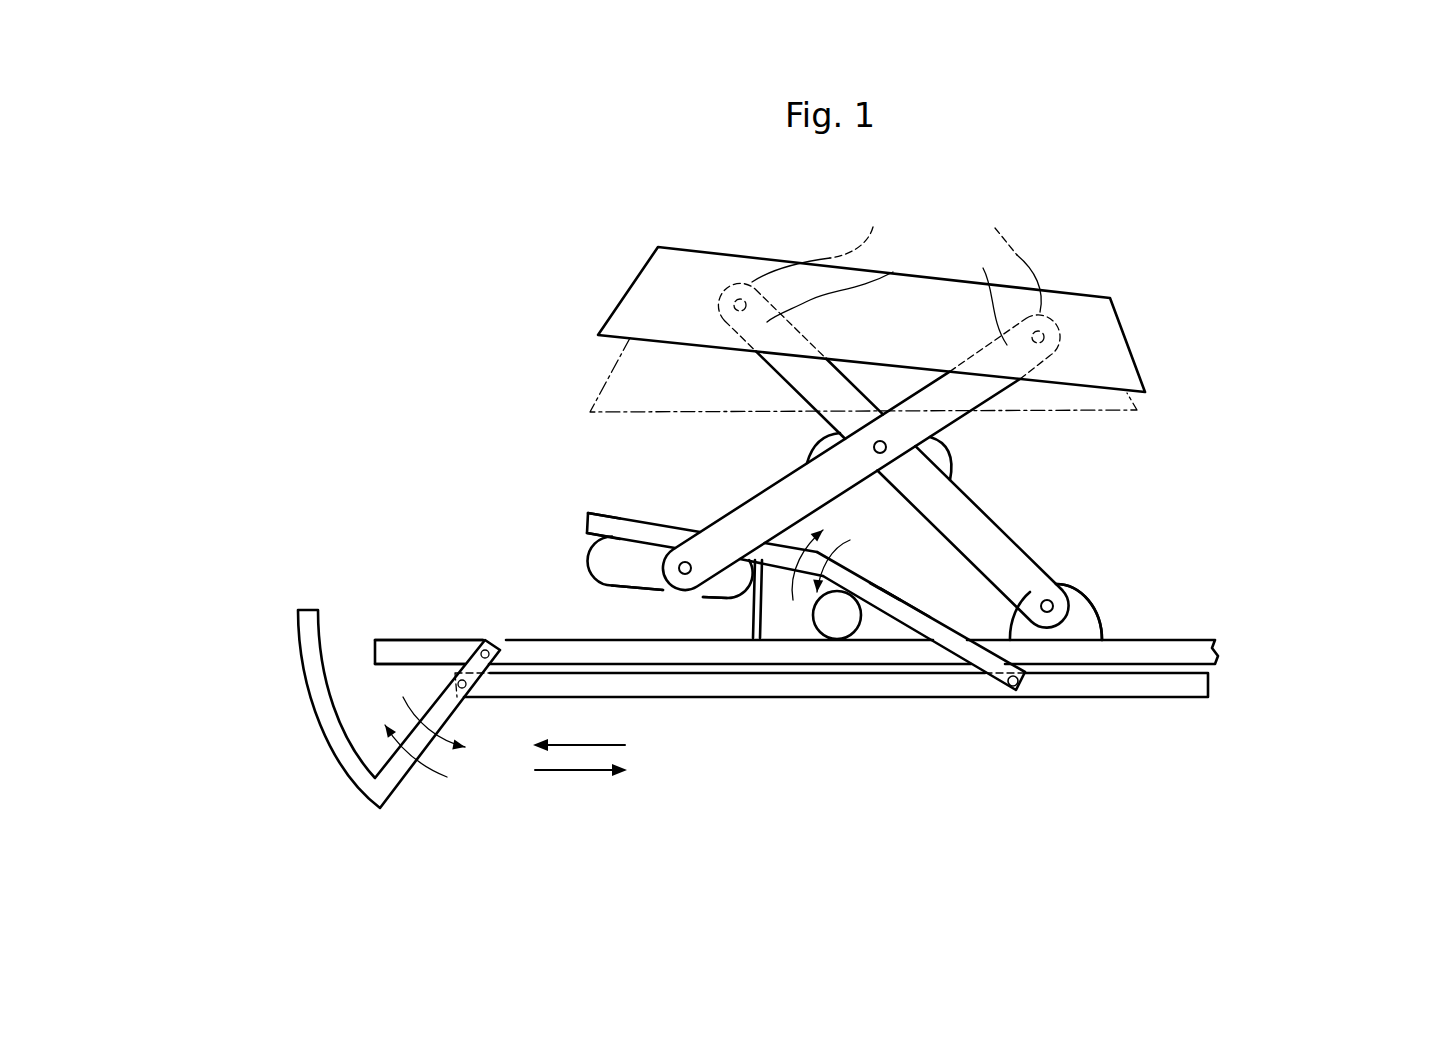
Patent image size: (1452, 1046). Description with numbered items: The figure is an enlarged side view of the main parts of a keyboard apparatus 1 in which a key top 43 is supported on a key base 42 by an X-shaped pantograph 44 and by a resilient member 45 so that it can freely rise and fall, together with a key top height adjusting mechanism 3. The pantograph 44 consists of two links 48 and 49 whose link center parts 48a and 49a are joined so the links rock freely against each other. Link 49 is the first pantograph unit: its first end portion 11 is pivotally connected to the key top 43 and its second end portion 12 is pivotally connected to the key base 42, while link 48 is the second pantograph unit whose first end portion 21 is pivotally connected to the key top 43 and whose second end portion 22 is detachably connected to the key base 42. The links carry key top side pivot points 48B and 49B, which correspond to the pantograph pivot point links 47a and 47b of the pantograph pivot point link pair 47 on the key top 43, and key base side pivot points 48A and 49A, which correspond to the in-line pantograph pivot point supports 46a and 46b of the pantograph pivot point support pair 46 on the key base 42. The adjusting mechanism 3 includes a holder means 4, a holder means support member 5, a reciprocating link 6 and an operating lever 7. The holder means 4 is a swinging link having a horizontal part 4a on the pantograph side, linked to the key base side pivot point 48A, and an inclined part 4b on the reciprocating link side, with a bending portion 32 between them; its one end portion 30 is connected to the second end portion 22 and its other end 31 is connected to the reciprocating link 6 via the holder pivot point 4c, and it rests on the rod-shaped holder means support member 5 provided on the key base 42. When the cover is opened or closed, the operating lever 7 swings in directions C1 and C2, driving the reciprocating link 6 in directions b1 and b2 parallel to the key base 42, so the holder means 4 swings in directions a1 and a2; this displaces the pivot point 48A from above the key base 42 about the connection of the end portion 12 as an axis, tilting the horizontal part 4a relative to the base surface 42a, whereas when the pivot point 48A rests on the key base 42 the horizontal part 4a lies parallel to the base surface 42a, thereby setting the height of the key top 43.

The keyboard apparatus 1 is at (352, 283).
The key top height adjusting mechanism 3 is at (560, 597).
The holder means 4 is at (848, 561).
The horizontal part 4a is at (620, 533).
The inclined part 4b is at (905, 612).
The holder pivot point 4c is at (1026, 688).
The holder means support member 5 is at (823, 620).
The reciprocating link 6 is at (1160, 688).
The operating lever 7 is at (312, 702).
The first end portion 11 is at (846, 284).
The second end portion 12 is at (1050, 580).
The first end portion 21 is at (982, 288).
The second end portion 22 is at (703, 575).
The one end portion 30 is at (588, 518).
The another end 31 is at (900, 603).
The bending portion 32 is at (760, 560).
The key base 42 is at (1200, 650).
The base surface 42a is at (513, 640).
The key top 43 is at (1118, 296).
The pantograph 44 is at (1015, 510).
The resilient member 45 is at (935, 455).
The pantograph pivot point support pair 46 is at (966, 724).
The pantograph pivot point support 46a is at (697, 627).
The pantograph pivot point support 46b is at (1052, 700).
The pantograph pivot point link pair 47 is at (1051, 226).
The pantograph pivot point link 47a is at (833, 236).
The pantograph pivot point link 47b is at (1006, 249).
The link 48 is at (752, 512).
The link center part 48a is at (999, 434).
The key base side pivot point 48A is at (685, 560).
The key top side pivot point 48B is at (1043, 333).
The link 49 is at (995, 535).
The link center part 49a is at (890, 447).
The key base side pivot point 49A is at (1055, 604).
The key top side pivot point 49B is at (737, 303).
The swing direction a1 is at (810, 587).
The swing direction a2 is at (831, 555).
The reciprocating direction b1 is at (594, 739).
The reciprocating direction b2 is at (574, 788).
The swing direction of operating lever C1 is at (431, 757).
The swing direction of operating lever C2 is at (418, 708).